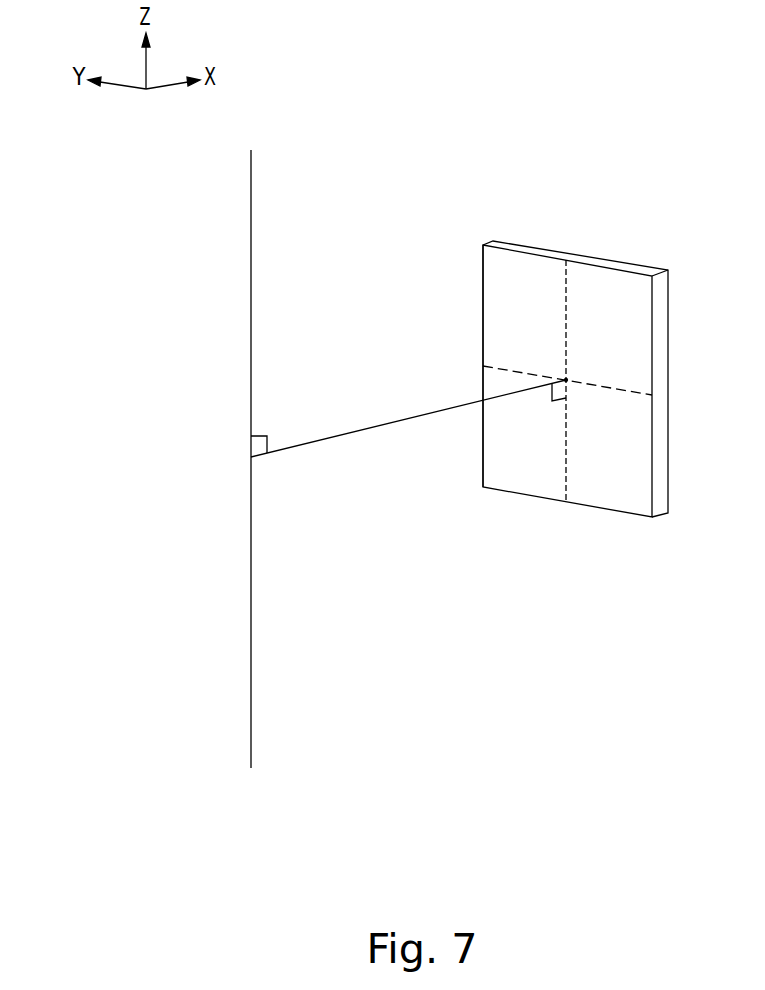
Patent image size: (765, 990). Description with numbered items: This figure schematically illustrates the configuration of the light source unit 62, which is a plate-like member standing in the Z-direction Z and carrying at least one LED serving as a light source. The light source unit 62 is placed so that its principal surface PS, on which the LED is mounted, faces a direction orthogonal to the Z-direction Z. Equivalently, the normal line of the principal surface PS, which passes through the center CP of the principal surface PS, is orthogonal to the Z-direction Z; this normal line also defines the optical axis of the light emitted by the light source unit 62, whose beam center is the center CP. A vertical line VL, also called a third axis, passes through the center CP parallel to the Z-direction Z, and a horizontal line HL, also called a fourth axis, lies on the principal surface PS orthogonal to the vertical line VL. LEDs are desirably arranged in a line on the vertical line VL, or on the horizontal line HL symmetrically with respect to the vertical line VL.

The Z-direction Z is at (250, 170).
The light source unit 62 is at (495, 242).
The principal surface PS is at (492, 281).
The vertical line VL is at (565, 316).
The horizontal line HL is at (622, 390).
The center of the principal surface CP is at (568, 377).